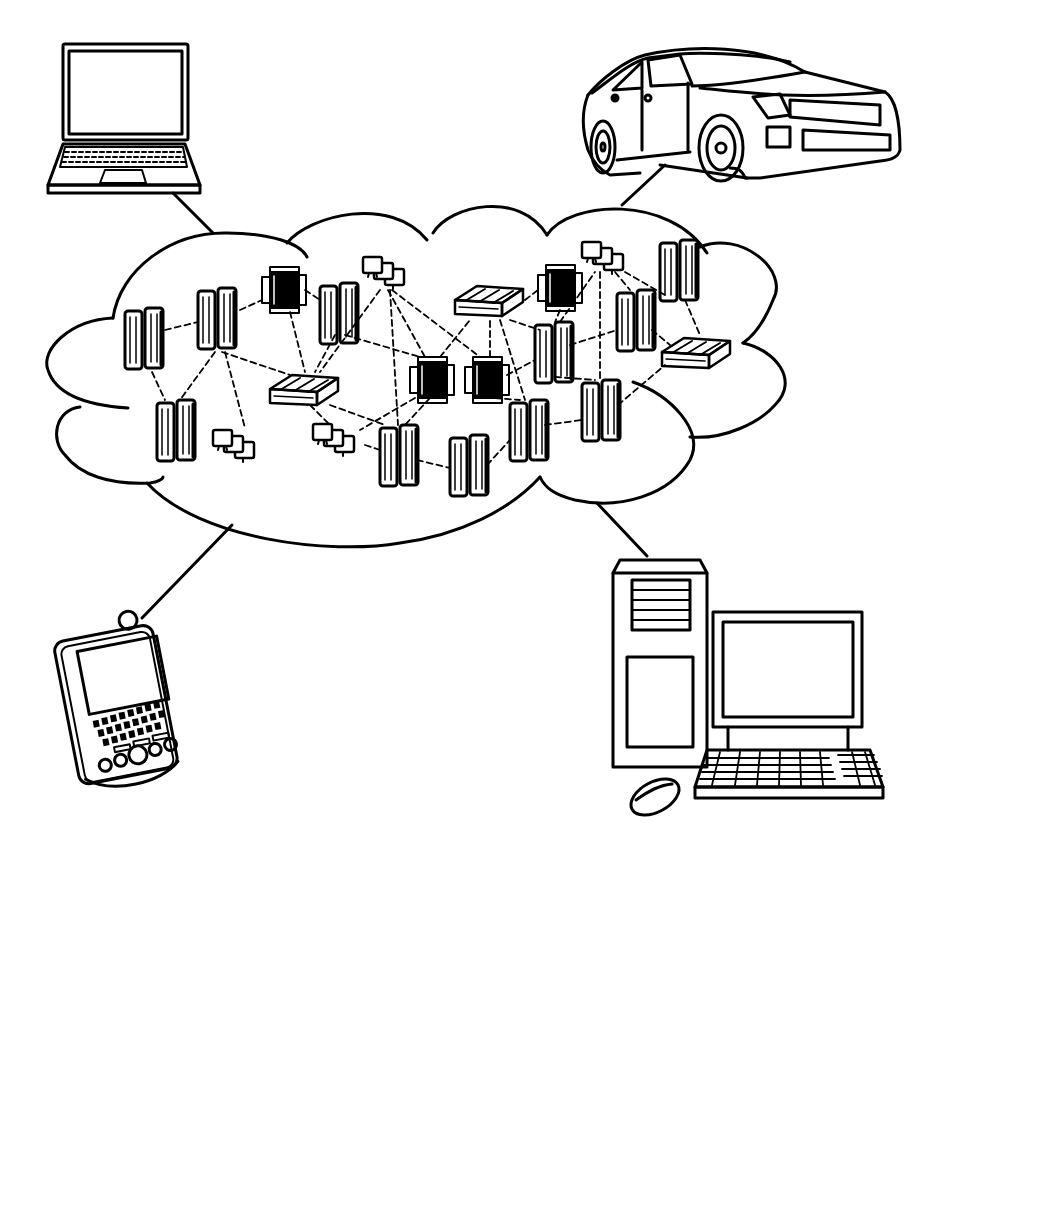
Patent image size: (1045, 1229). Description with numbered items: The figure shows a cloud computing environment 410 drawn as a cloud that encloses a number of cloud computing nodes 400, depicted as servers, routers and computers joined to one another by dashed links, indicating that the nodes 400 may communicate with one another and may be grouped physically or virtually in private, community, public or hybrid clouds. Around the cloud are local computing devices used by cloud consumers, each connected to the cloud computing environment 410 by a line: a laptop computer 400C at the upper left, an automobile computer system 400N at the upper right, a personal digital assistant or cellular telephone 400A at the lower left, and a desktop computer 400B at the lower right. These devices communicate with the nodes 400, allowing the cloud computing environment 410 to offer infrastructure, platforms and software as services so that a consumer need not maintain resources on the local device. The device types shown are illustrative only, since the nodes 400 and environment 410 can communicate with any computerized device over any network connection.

The cloud computing nodes 400 is at (733, 377).
The cloud computing environment 410 is at (790, 348).
The personal digital assistant (PDA) or cellular telephone 400A is at (178, 695).
The desktop computer 400B is at (785, 612).
The laptop computer 400C is at (188, 100).
The automobile computer system 400N is at (587, 112).